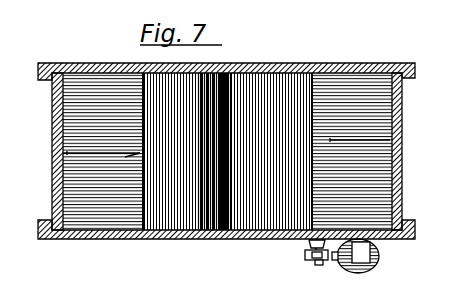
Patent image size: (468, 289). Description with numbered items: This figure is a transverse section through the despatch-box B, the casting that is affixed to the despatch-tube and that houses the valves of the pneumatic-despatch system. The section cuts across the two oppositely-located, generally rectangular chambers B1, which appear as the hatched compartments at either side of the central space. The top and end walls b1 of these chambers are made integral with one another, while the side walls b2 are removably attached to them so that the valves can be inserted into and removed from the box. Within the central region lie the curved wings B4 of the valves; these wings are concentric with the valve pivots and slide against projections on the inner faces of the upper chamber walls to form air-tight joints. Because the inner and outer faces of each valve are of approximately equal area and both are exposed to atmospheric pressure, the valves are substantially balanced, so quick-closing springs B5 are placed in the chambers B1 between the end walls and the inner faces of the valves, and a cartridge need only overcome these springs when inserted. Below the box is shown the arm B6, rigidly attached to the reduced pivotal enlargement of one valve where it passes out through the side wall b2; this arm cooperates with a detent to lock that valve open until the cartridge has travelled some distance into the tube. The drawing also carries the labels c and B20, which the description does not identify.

The despatch-box B is at (226, 138).
The top and end walls b1 is at (418, 133).
The side walls b2 is at (311, 51).
The chambers B1 is at (96, 118).
The curved wings B4 is at (266, 140).
The springs B5 is at (356, 142).
The opening c is at (132, 153).
The arm B6 is at (318, 261).
The pipe B20 is at (370, 275).